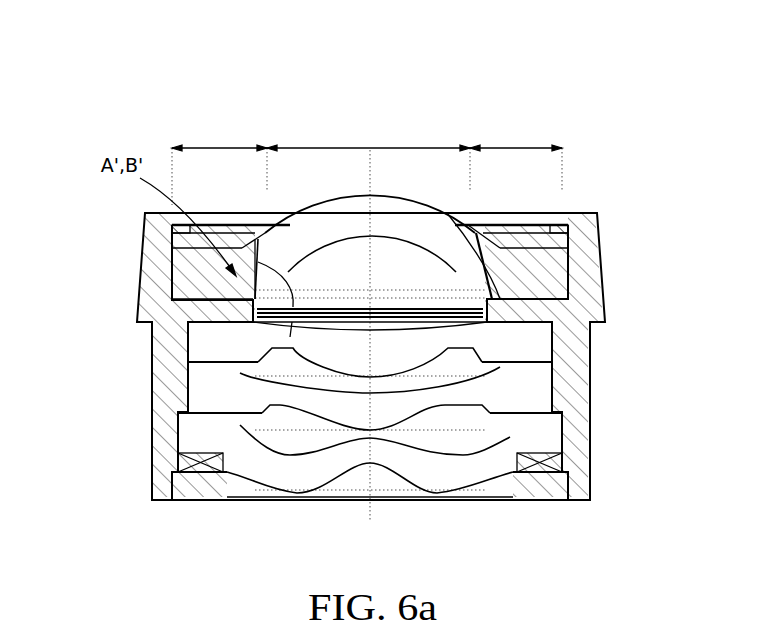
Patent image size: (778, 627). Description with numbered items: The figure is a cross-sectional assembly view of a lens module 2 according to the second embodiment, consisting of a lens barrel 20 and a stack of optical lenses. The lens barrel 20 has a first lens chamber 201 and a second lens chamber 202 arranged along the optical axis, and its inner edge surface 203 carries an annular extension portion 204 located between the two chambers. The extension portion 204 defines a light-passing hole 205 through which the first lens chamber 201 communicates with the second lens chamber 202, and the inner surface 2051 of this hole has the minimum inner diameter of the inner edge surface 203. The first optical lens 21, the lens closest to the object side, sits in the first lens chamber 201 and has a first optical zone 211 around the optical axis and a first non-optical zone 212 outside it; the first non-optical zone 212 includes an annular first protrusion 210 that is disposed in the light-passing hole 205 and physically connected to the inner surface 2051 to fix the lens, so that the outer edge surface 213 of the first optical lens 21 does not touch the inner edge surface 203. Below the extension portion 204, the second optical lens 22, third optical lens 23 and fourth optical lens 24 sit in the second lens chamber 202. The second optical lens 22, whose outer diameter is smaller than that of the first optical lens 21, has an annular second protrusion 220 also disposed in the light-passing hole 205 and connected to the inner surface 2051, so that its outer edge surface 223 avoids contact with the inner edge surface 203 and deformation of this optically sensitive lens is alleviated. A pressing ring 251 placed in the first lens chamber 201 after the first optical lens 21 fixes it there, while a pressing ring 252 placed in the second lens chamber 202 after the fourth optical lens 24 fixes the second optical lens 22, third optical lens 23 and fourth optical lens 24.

The lens module 2 is at (280, 84).
The lens barrel 20 is at (163, 390).
The first lens chamber 201 is at (572, 257).
The second lens chamber 202 is at (567, 427).
The inner edge surface 203 is at (517, 248).
The extension portion 204 is at (248, 306).
The light-passing hole 205 is at (357, 303).
The inner surface 2051 is at (473, 293).
The first optical lens 21 is at (552, 283).
The first protrusion 210 is at (257, 300).
The first optical zone 211 is at (368, 146).
The first non-optical zone 212 is at (210, 146).
The outer edge surface 213 is at (175, 268).
The second optical lens 22 is at (530, 344).
The second protrusion 220 is at (250, 340).
The outer edge surface 223 is at (188, 344).
The third optical lens 23 is at (537, 386).
The fourth optical lens 24 is at (569, 443).
The pressing ring 251 is at (547, 232).
The pressing ring 252 is at (583, 462).